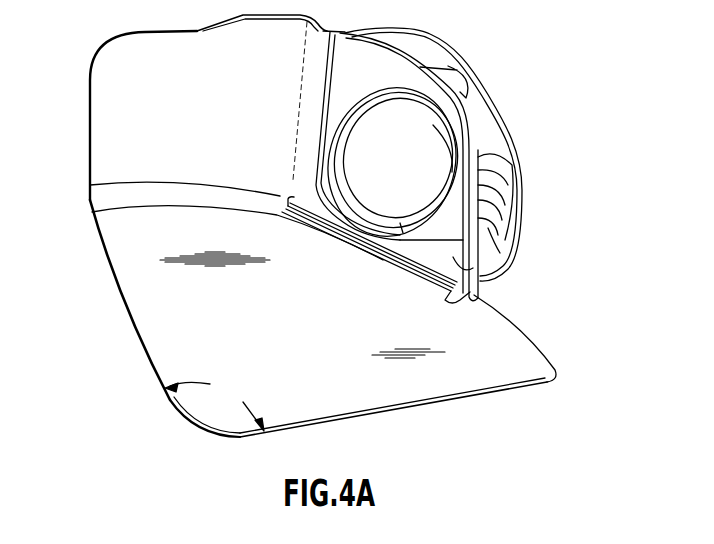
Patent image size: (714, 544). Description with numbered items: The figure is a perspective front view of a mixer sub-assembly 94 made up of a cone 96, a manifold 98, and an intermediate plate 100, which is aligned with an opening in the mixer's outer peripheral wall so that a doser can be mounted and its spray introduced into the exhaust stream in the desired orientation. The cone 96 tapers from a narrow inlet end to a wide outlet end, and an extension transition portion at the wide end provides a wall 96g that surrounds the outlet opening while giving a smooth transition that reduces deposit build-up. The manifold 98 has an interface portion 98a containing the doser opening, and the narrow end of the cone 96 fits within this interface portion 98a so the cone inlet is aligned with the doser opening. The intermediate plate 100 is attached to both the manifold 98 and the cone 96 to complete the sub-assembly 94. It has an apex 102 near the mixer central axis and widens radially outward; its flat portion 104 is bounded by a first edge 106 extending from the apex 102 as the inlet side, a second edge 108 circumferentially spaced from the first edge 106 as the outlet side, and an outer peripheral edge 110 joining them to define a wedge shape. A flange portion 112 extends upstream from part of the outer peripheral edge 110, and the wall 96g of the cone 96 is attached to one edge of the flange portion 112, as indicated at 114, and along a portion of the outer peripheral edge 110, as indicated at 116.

The sub-assembly 94 is at (578, 66).
The cone 96 is at (353, 68).
The wall 96g is at (516, 258).
The manifold 98 is at (425, 43).
The interface portion 98a is at (497, 127).
The intermediate plate 100 is at (165, 345).
The apex 102 is at (200, 435).
The flat portion 104 is at (330, 335).
The first edge 106 is at (385, 416).
The second edge 108 is at (120, 284).
The outer peripheral edge 110 is at (546, 345).
The flange portion 112 is at (110, 97).
The attachment of wall to flange portion edge 114 is at (327, 77).
The attachment along outer peripheral edge 116 is at (400, 262).